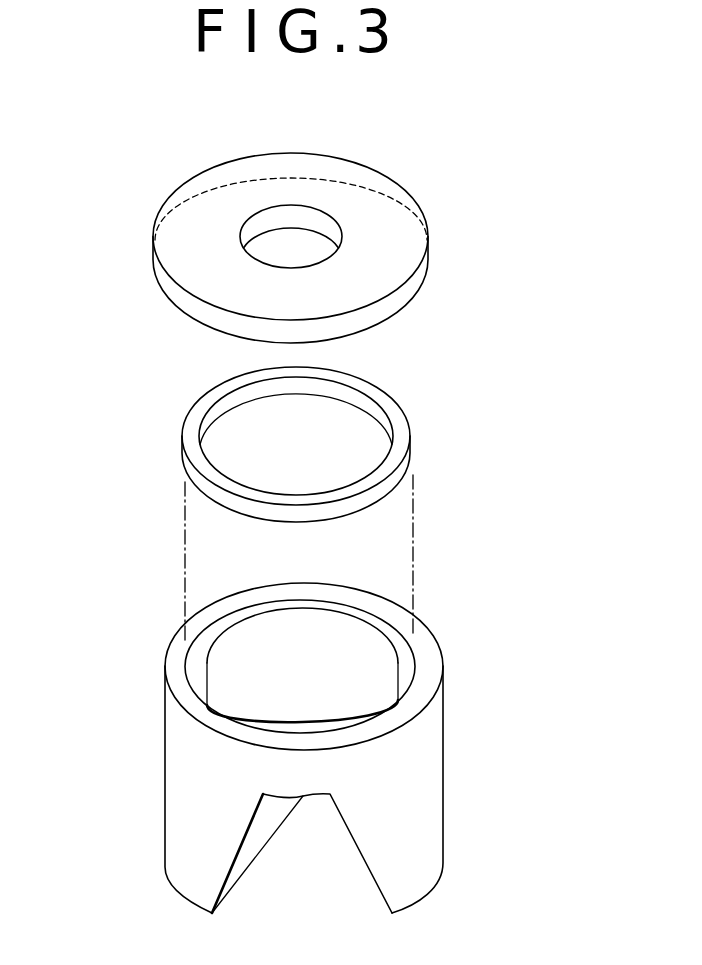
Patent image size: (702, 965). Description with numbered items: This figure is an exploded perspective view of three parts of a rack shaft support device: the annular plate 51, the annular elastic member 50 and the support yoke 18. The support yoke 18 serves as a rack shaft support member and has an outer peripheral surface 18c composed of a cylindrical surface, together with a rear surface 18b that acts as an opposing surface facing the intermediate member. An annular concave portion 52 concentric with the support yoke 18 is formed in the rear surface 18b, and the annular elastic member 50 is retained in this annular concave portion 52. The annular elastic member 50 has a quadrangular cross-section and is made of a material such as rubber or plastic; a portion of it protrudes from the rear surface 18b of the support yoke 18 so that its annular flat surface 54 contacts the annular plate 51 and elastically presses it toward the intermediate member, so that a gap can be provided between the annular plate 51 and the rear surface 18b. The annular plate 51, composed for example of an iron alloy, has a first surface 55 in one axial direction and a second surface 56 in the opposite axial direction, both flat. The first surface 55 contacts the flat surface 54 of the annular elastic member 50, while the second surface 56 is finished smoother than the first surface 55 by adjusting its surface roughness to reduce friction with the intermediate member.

The support yoke 18 is at (448, 733).
The rear surface 18b is at (427, 653).
The outer peripheral surface 18c is at (183, 777).
The annular elastic member 50 is at (403, 405).
The annular plate 51 is at (393, 178).
The annular concave portion 52 is at (232, 625).
The annular flat surface 54 is at (193, 425).
The first surface 55 is at (362, 285).
The second surface 56 is at (213, 218).